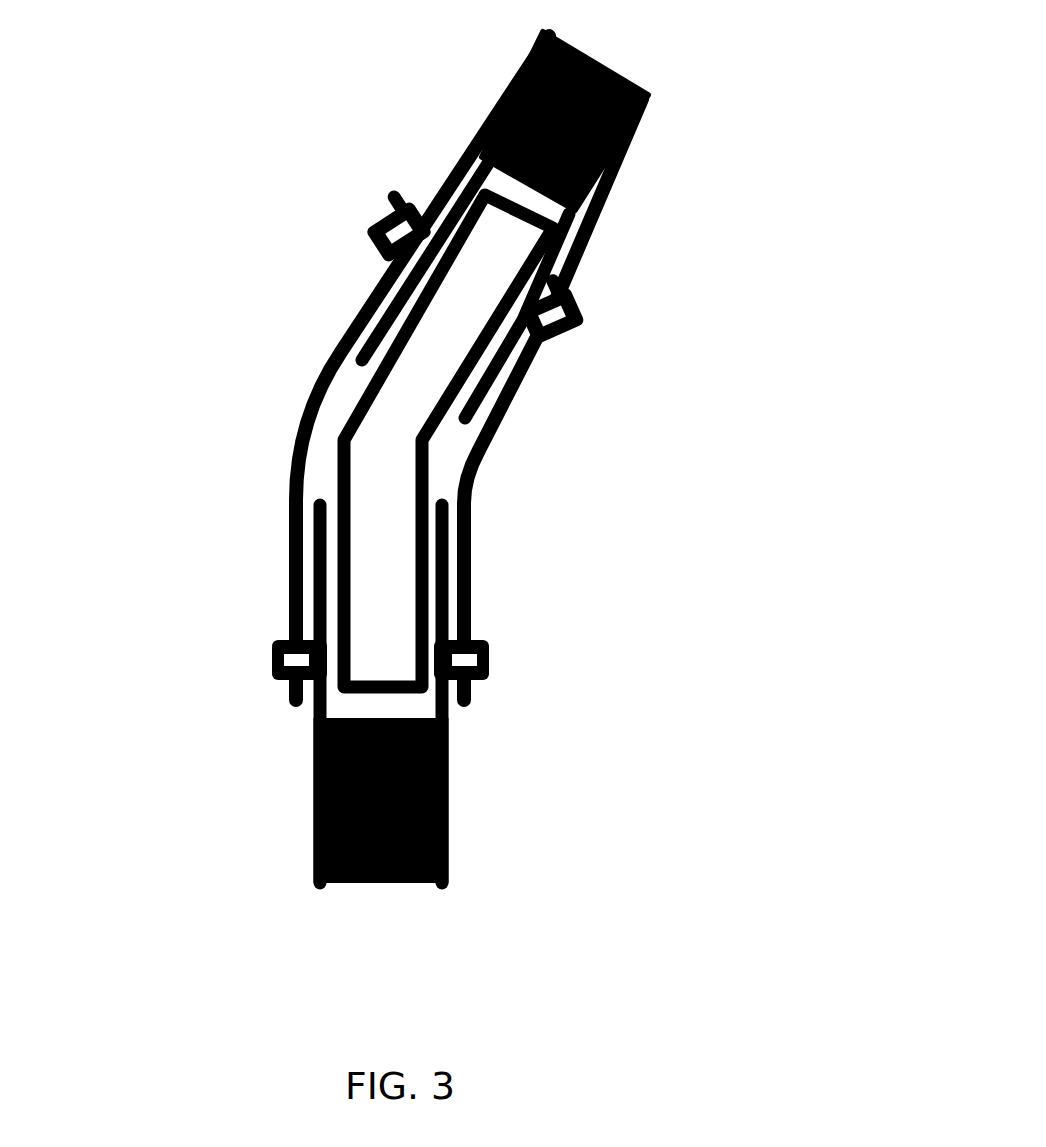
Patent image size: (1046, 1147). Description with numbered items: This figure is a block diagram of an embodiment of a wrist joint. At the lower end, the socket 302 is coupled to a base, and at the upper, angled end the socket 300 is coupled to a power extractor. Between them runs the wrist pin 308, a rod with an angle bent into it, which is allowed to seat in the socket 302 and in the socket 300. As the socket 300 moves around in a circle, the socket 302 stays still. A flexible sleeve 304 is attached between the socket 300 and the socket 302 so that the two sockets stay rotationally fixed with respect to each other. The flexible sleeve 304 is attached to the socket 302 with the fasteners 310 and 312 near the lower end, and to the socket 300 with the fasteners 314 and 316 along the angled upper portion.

The socket 300 is at (652, 140).
The socket 302 is at (447, 798).
The flexible sleeve 304 is at (332, 365).
The wrist pin 308 is at (388, 462).
The fastener 310 is at (489, 660).
The fastener 312 is at (272, 658).
The fastener 314 is at (580, 300).
The fastener 316 is at (372, 224).